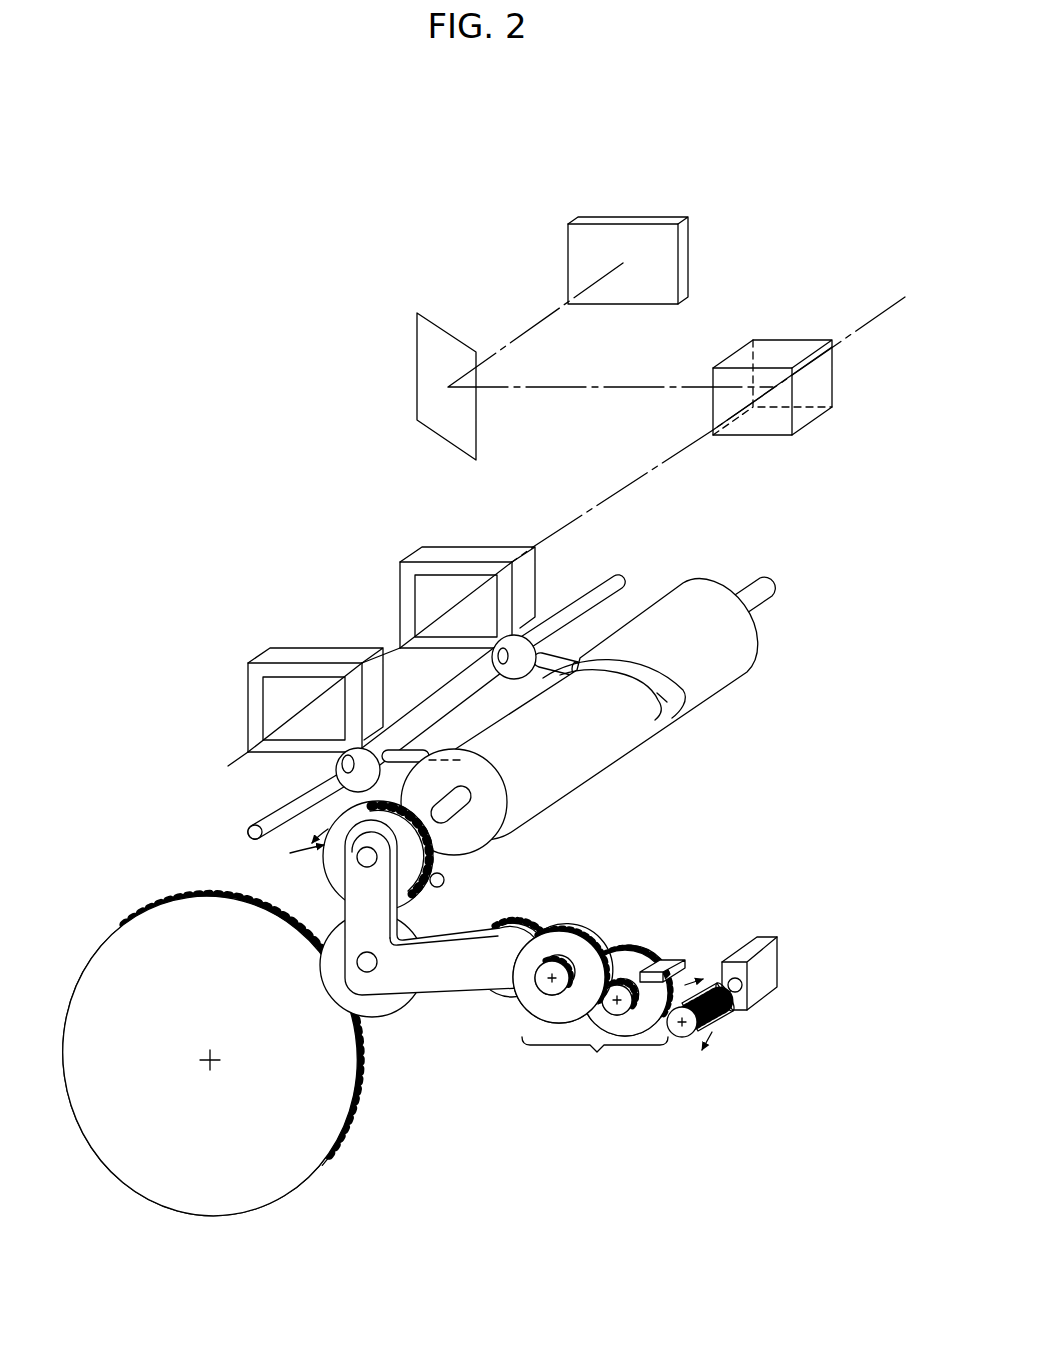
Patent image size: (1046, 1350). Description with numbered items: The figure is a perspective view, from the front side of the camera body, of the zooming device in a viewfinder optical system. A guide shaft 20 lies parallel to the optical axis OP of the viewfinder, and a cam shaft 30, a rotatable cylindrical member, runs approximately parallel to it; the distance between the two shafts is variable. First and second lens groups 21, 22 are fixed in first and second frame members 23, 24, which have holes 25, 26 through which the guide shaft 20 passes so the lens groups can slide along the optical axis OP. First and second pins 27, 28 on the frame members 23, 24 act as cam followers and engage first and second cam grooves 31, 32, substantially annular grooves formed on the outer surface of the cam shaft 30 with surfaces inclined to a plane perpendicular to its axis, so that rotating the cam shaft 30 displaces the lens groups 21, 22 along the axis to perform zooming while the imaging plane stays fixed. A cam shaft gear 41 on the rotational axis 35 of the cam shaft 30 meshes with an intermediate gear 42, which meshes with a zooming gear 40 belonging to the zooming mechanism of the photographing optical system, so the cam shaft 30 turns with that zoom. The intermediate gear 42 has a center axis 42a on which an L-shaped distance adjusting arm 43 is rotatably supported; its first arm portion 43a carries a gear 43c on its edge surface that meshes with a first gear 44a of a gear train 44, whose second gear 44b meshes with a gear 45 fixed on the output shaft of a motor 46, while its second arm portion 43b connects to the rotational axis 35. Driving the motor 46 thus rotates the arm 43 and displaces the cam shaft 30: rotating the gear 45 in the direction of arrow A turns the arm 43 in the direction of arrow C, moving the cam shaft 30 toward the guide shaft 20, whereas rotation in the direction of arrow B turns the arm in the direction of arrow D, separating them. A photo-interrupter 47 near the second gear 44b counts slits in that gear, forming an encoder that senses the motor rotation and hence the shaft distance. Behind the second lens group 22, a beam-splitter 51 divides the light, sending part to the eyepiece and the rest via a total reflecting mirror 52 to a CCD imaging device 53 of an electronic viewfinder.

The guide shaft 20 is at (250, 833).
The first lens group 21 is at (292, 690).
The second lens group 22 is at (445, 587).
The first frame member 23 is at (283, 679).
The second frame member 24 is at (433, 576).
The hole 25 is at (343, 764).
The hole 26 is at (528, 636).
The first pin 27 is at (410, 750).
The second pin 28 is at (575, 640).
The cam shaft 30 is at (588, 716).
The first cam groove 31 is at (516, 812).
The second cam groove 32 is at (670, 704).
The rotational axis 35 is at (357, 860).
The zooming gear 40 is at (365, 1135).
The cam shaft gear 41 is at (444, 880).
The intermediate gear 42 is at (380, 1015).
The center axis 42a is at (372, 975).
The distance adjusting arm 43 is at (404, 953).
The first arm portion 43a is at (503, 950).
The second arm portion 43b is at (360, 905).
The gear 43c is at (526, 930).
The gear train 44 is at (592, 975).
The first gear 44a is at (558, 958).
The second gear 44b is at (624, 966).
The gear 45 is at (684, 1038).
The motor 46 is at (757, 945).
The photo-interrupter 47 is at (672, 961).
The beam-splitter 51 is at (778, 350).
The total reflecting mirror 52 is at (452, 330).
The CCD imaging device 53 is at (632, 217).
The optical axis OP is at (655, 470).
The arrow A is at (712, 1036).
The arrow B is at (732, 1018).
The arrow C is at (311, 828).
The arrow D is at (297, 852).